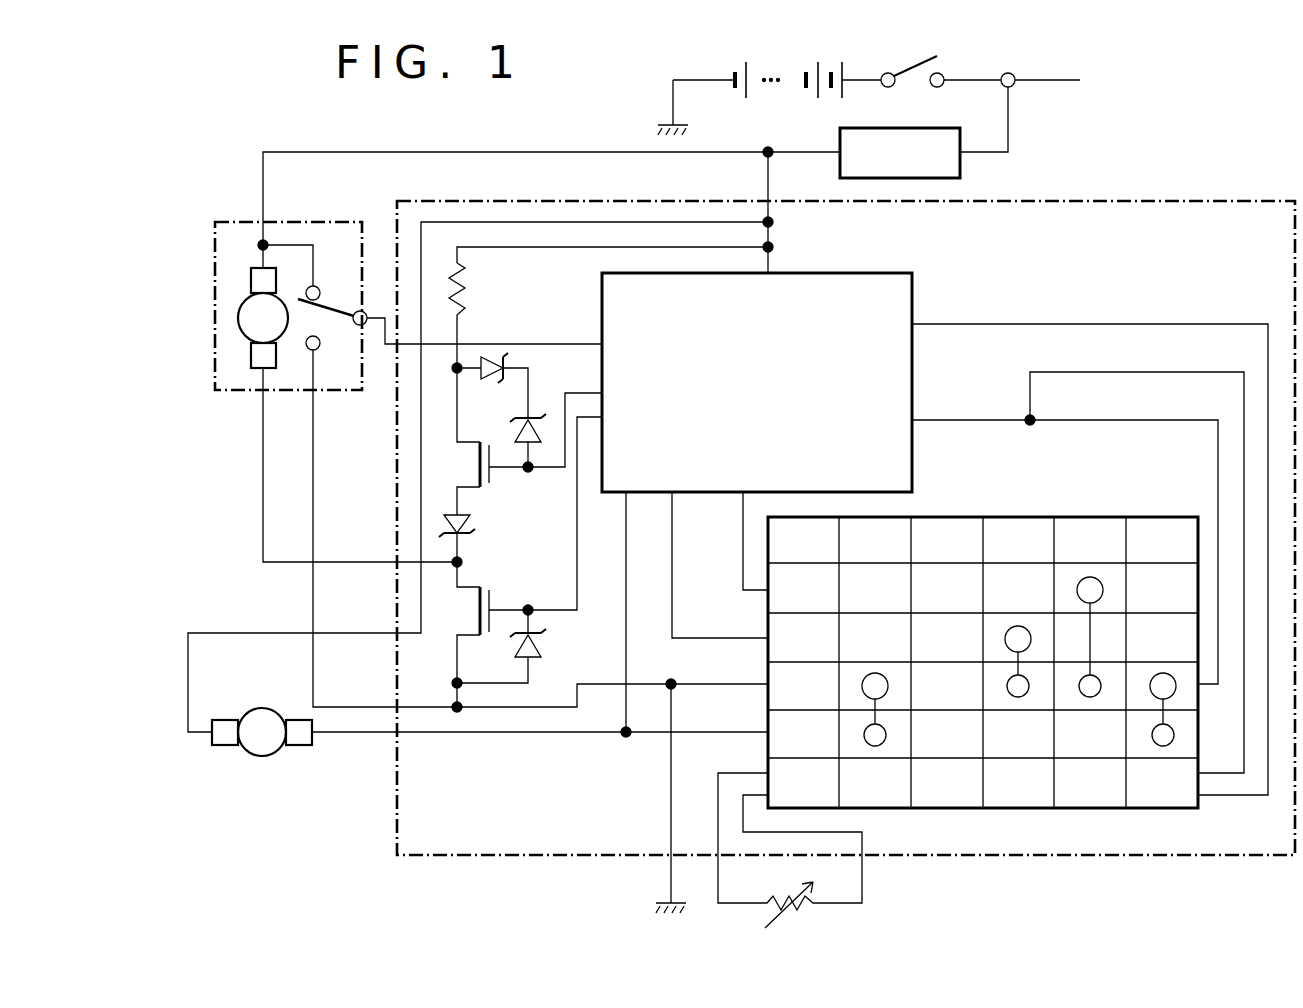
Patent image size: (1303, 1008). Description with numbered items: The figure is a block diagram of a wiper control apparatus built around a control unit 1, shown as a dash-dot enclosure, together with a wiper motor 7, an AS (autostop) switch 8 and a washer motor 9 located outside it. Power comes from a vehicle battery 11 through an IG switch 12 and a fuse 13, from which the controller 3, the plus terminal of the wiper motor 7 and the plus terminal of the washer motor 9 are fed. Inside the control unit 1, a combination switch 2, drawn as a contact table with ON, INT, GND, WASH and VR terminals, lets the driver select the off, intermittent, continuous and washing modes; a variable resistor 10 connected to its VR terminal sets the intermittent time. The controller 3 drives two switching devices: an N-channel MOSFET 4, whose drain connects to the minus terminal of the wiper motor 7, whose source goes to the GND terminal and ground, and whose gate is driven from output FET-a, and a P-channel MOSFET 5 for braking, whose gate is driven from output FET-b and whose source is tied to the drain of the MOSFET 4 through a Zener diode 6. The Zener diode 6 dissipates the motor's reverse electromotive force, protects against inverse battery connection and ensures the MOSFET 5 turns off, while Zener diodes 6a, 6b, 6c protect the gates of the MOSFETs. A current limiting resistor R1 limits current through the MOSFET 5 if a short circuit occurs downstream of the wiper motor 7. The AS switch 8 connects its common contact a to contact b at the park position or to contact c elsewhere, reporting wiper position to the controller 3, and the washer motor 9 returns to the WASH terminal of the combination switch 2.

The control unit 1 is at (1200, 202).
The combination switch 2 is at (1103, 517).
The controller 3 is at (838, 272).
The MOSFET 4 is at (468, 608).
The MOSFET 5 is at (468, 458).
The Zener diode 6 is at (475, 523).
The Zener diode 6a is at (520, 365).
The Zener diode 6b is at (540, 445).
The Zener diode 6c is at (545, 628).
The wiper motor 7 is at (240, 300).
The AS switch 8 is at (333, 300).
The washer motor 9 is at (260, 707).
The variable resistor 10 is at (797, 915).
The battery 11 is at (805, 55).
The IG switch 12 is at (942, 63).
The fuse 13 is at (915, 127).
The current limiting resistor R1 is at (465, 302).